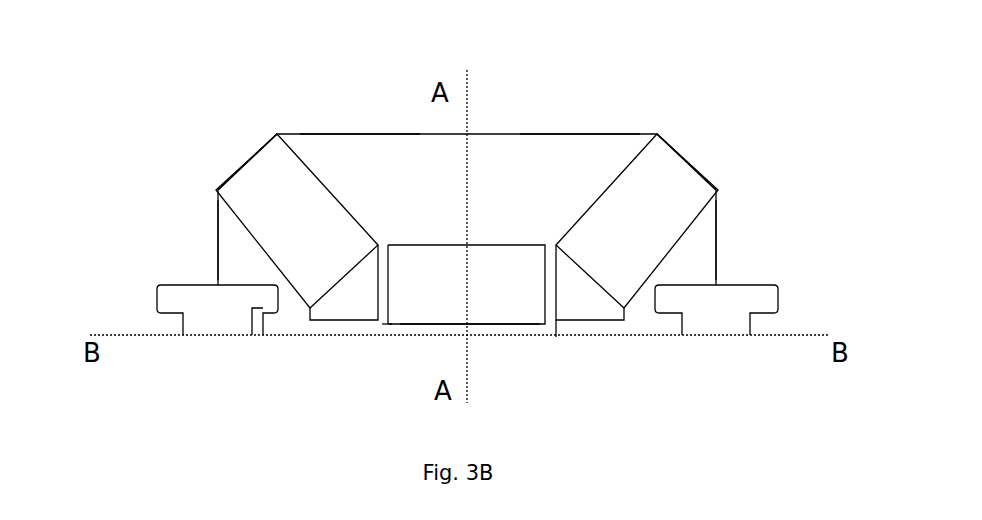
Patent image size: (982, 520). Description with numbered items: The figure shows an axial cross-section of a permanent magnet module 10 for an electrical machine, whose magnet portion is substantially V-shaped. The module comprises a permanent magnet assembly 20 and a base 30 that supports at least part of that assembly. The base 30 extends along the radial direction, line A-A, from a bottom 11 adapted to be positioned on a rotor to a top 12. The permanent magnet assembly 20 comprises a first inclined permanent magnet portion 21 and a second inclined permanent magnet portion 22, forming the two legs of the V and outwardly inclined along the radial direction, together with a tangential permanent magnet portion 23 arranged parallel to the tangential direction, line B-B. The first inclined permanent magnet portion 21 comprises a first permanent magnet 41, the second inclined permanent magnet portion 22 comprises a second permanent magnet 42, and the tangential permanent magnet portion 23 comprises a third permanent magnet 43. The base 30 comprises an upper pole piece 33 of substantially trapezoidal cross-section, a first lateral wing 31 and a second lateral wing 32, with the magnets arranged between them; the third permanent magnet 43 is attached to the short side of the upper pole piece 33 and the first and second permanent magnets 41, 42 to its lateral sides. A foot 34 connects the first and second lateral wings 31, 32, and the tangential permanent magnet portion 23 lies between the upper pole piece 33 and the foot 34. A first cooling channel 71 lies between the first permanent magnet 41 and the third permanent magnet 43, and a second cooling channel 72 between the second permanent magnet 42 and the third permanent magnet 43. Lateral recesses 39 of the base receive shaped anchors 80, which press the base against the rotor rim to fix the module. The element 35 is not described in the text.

The permanent magnet module 10 is at (451, 225).
The bottom 11 is at (442, 337).
The top 12 is at (585, 134).
The permanent magnet assembly 20 is at (226, 134).
The first inclined permanent magnet portion 21 is at (678, 170).
The second inclined permanent magnet portion 22 is at (245, 188).
The tangential permanent magnet portion 23 is at (408, 303).
The base 30 is at (306, 135).
The first lateral wing 31 is at (692, 253).
The second lateral wing 32 is at (240, 247).
The upper pole piece 33 is at (367, 175).
The foot 34 is at (493, 328).
The partition wall 35 is at (557, 338).
The lateral recesses 39 is at (263, 345).
The first permanent magnet 41 is at (677, 203).
The second permanent magnet 42 is at (267, 220).
The third permanent magnet 43 is at (496, 256).
The first cooling channel 71 is at (590, 310).
The second cooling channel 72 is at (348, 295).
The shaped anchors 80 is at (218, 323).